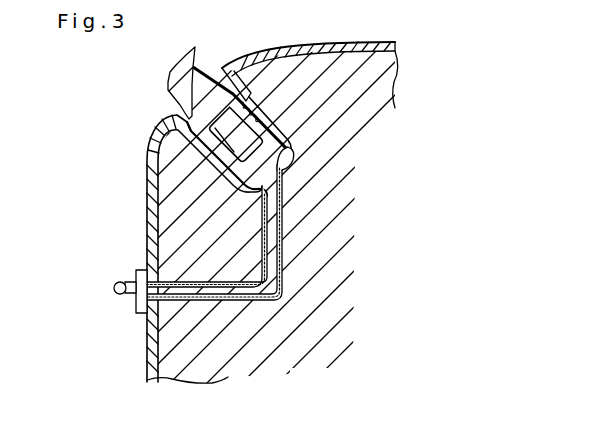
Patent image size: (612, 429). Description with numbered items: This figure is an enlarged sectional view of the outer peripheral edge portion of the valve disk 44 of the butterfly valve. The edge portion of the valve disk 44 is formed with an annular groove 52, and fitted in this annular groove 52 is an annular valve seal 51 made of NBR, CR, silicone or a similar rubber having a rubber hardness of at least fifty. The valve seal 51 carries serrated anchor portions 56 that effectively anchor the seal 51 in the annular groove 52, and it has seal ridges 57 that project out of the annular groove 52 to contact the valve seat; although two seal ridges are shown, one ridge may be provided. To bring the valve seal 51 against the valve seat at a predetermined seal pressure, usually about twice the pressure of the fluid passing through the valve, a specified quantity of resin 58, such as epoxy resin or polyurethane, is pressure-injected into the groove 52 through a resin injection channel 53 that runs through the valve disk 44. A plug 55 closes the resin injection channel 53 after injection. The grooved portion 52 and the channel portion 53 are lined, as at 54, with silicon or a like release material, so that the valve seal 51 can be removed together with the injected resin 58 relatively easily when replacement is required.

The valve disk 44 is at (373, 85).
The annular valve seal 51 is at (213, 88).
The annular groove 52 is at (243, 145).
The resin injection channel 53 is at (228, 300).
The release material lining 54 is at (262, 250).
The plug 55 is at (126, 294).
The serrated anchor portions 56 is at (148, 182).
The seal ridges 57 is at (195, 48).
The resin 58 is at (283, 148).